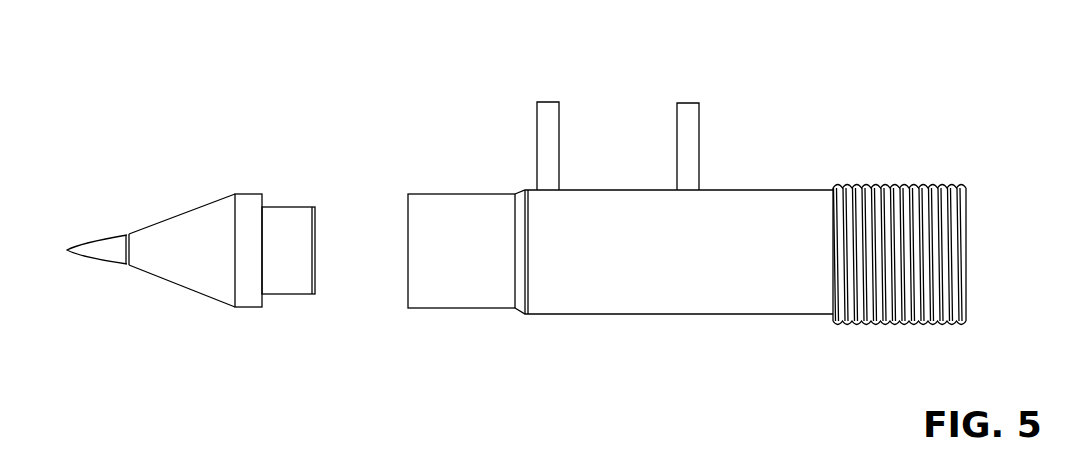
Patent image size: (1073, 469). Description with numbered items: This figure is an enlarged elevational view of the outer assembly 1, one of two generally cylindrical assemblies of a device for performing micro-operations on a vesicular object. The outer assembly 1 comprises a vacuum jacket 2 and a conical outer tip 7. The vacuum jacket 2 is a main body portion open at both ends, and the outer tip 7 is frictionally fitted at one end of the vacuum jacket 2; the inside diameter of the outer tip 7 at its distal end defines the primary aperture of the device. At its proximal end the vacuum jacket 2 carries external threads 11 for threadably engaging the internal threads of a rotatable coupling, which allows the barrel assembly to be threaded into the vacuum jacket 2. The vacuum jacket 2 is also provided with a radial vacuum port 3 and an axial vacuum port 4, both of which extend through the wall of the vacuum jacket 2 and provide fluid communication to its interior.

The outer assembly 1 is at (516, 245).
The vacuum jacket 2 is at (620, 288).
The radial vacuum port 3 is at (590, 115).
The axial vacuum port 4 is at (730, 115).
The outer tip 7 is at (191, 204).
The external threads 11 is at (892, 287).